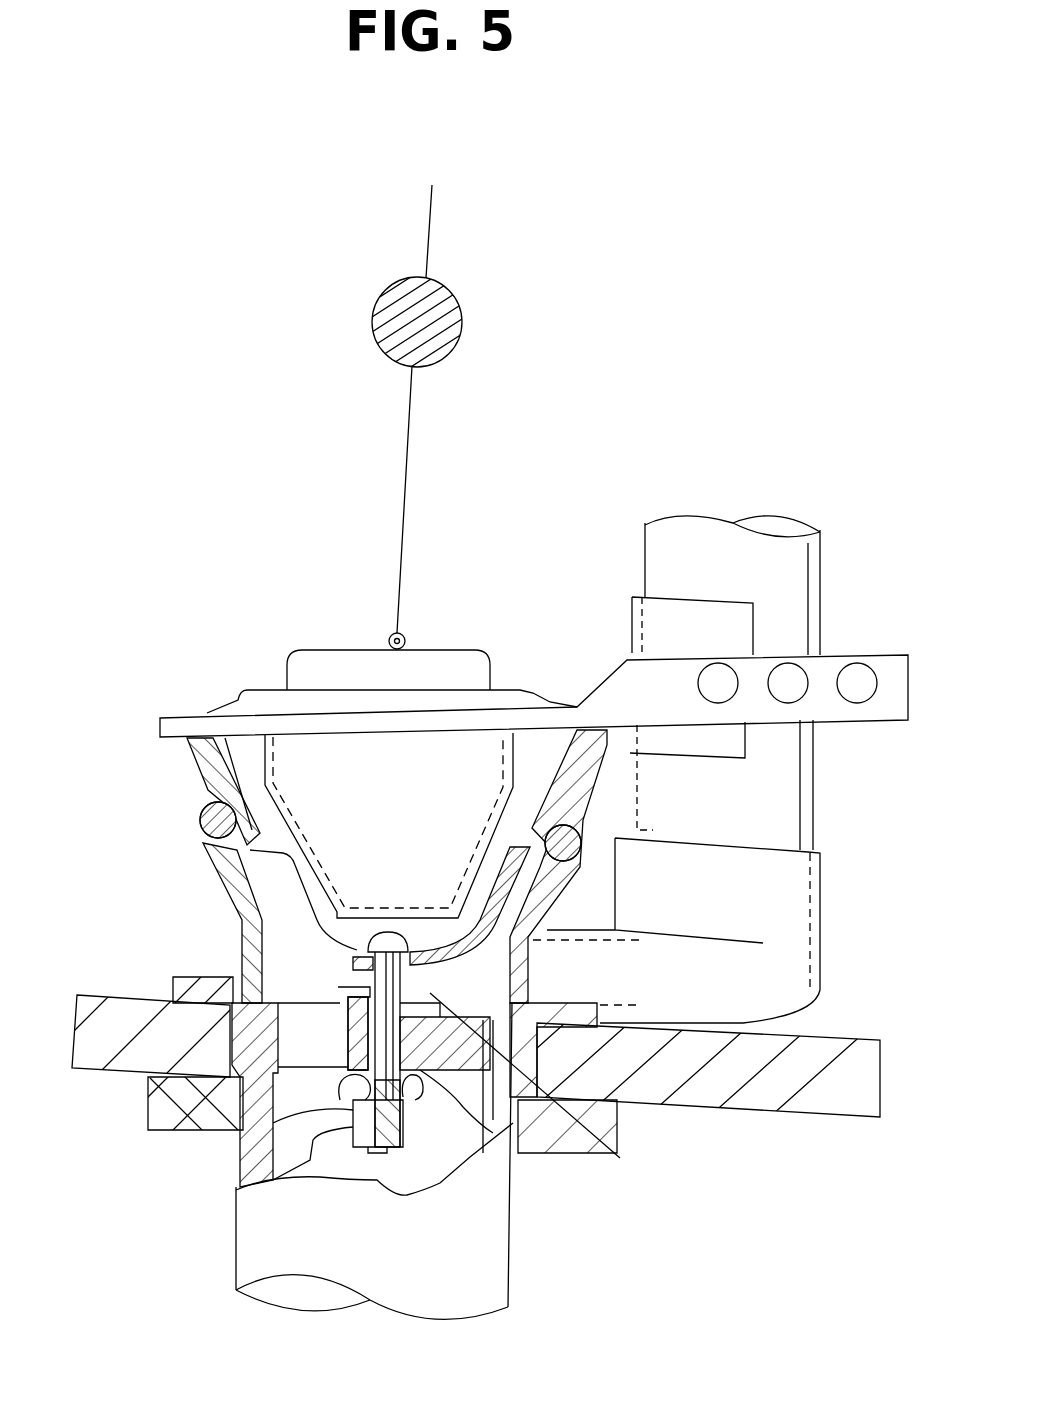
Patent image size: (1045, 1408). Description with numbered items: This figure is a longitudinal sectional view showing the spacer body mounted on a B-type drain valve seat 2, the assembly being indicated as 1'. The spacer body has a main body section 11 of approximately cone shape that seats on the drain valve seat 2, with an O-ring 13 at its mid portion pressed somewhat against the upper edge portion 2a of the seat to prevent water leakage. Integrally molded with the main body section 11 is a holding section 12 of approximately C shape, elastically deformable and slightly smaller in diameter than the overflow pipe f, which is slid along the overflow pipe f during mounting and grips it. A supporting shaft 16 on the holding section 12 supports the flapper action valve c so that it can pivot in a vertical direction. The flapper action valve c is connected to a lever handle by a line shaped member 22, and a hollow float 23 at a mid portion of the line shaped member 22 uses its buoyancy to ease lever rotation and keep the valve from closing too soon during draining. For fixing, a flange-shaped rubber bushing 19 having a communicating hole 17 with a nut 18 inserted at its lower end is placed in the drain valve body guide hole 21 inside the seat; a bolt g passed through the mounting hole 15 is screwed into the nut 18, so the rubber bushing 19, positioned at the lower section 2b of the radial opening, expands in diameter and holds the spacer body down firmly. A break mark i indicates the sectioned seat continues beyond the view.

The line shaped member 22 is at (430, 232).
The hollow float 23 is at (460, 305).
The flapper action valve c is at (323, 648).
The holding section 12 is at (628, 642).
The overflow pipe f is at (822, 588).
The supporting shaft 16 is at (712, 692).
The container assembly 1' is at (503, 710).
The main body section 11 is at (200, 788).
The O-ring 13 is at (200, 822).
The drain valve seat 2 is at (237, 893).
The upper edge portion 2a is at (577, 833).
The lower section of the opening section 2b is at (524, 1033).
The bolt g is at (368, 940).
The mounting hole 15 is at (617, 1127).
The plate end i is at (857, 1110).
The communicating hole 17 is at (273, 1137).
The nut 18 is at (273, 1173).
The rubber bushing 19 is at (470, 1133).
The drain valve body guide hole 21 is at (430, 1073).